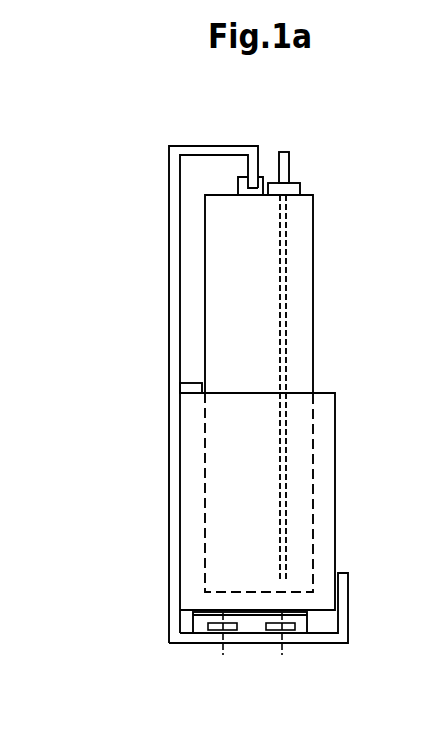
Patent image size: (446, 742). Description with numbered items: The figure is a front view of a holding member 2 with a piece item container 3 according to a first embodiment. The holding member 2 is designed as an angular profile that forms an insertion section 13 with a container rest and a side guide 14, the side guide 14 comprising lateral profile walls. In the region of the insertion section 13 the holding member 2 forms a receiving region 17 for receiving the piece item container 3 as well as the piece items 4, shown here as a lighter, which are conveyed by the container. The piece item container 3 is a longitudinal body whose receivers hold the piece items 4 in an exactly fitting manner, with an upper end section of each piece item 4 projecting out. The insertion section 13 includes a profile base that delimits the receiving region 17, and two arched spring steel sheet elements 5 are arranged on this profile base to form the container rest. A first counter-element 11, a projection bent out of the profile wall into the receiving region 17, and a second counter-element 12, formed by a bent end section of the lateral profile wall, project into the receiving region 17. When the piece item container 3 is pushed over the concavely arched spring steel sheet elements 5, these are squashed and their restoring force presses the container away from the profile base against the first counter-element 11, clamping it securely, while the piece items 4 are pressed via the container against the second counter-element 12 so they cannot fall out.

The holding member 2 is at (175, 247).
The piece item container 3 is at (325, 529).
The piece item 4 is at (299, 287).
The spring steel sheet element 5 is at (252, 623).
The first counter-element 11 is at (192, 388).
The second counter-element 12 is at (253, 155).
The insertion section 13 is at (168, 623).
The side guide 14 is at (342, 610).
The receiving region 17 is at (188, 459).